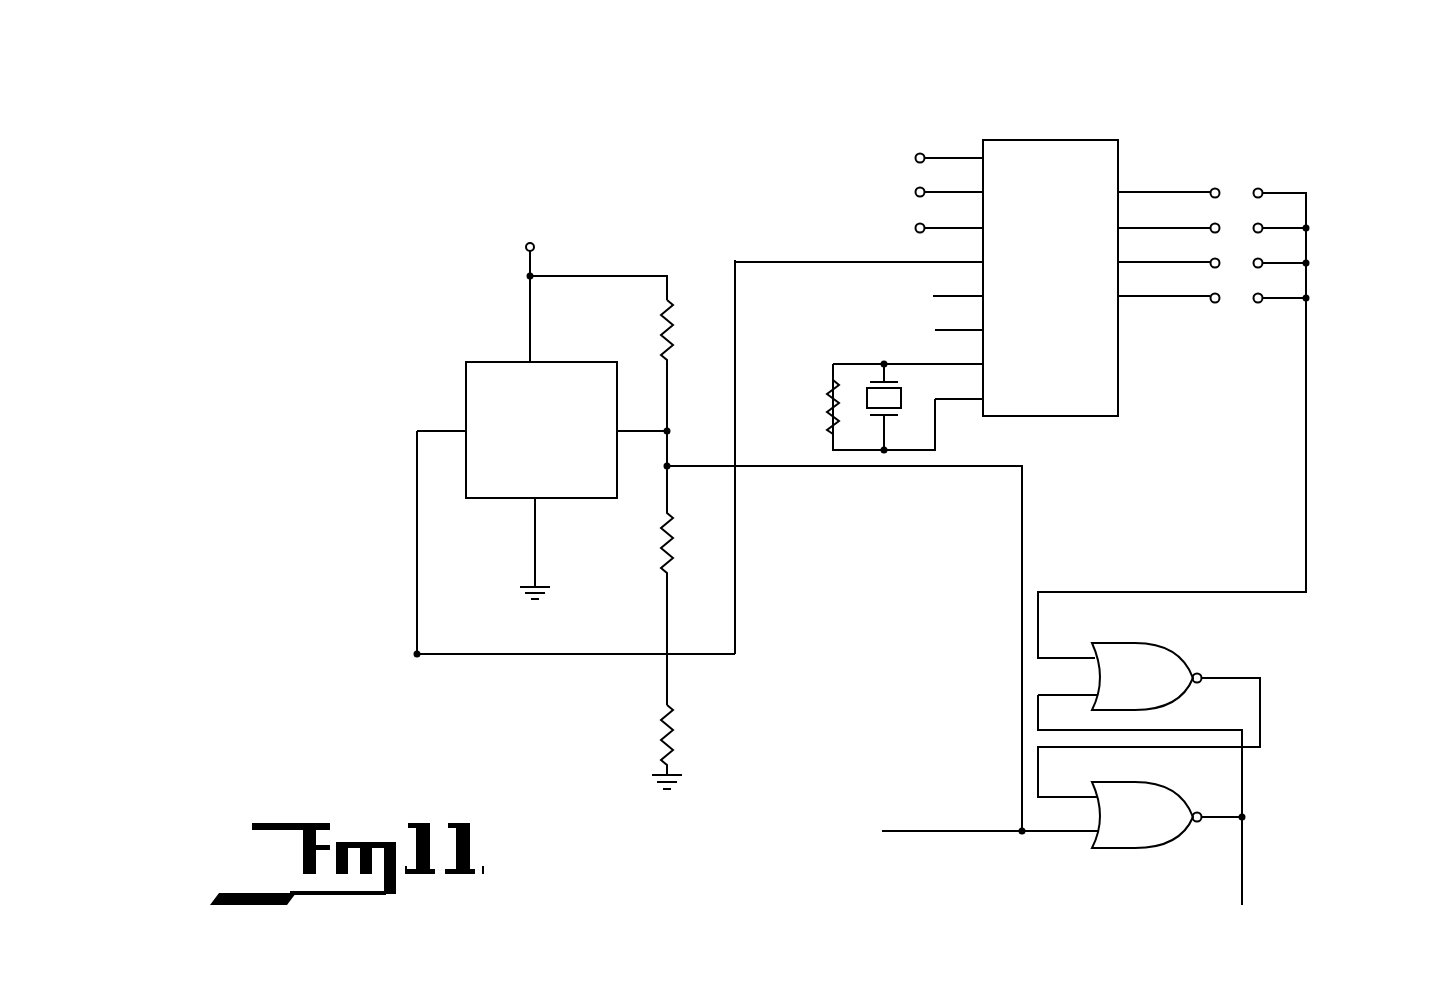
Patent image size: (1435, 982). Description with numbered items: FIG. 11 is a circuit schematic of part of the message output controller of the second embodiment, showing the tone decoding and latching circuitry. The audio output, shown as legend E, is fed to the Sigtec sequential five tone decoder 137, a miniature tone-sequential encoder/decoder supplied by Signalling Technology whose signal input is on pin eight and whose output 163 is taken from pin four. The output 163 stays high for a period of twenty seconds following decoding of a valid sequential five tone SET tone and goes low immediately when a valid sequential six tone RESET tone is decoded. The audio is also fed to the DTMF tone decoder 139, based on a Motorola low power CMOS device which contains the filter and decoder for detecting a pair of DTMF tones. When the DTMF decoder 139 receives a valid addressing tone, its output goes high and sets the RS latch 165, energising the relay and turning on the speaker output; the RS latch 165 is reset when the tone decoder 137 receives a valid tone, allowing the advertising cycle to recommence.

The Sigtec sequential five tone decoder 137 is at (617, 241).
The DTMF tone decoder 139 is at (1099, 126).
The output 163 is at (860, 468).
The RS latch 165 is at (1292, 739).